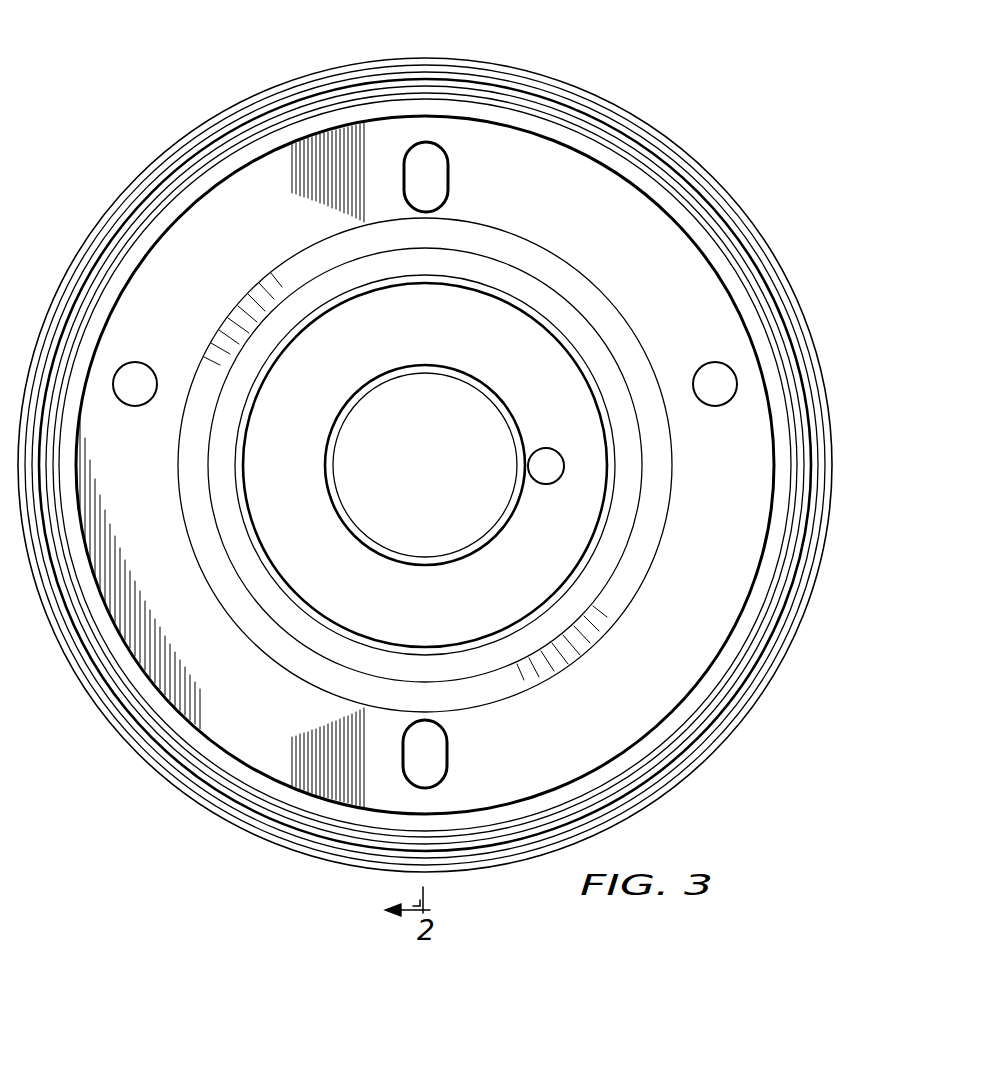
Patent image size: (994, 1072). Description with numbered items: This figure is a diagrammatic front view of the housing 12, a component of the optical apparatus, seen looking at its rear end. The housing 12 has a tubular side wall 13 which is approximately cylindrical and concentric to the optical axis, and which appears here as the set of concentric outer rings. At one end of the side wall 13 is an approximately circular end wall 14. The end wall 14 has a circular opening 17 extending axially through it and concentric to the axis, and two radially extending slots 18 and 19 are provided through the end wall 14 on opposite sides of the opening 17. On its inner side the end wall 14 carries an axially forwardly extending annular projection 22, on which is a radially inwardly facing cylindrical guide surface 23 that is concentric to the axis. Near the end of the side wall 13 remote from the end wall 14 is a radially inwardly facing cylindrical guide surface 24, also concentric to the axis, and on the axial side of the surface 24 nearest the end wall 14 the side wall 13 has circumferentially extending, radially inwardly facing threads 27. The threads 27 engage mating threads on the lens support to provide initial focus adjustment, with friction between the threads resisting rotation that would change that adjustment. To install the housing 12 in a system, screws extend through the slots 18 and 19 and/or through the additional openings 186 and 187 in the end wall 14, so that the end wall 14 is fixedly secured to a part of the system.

The housing 12 is at (566, 82).
The tubular side wall 13 is at (498, 80).
The end wall 14 is at (648, 230).
The circular opening 17 is at (467, 373).
The radially extending slot 18 is at (447, 165).
The radially extending slot 19 is at (445, 744).
The annular projection 22 is at (637, 562).
The cylindrical guide surface 23 is at (592, 522).
The cylindrical guide surface 24 is at (582, 110).
The threads 27 is at (795, 495).
The additional opening 186 is at (140, 405).
The additional opening 187 is at (710, 405).